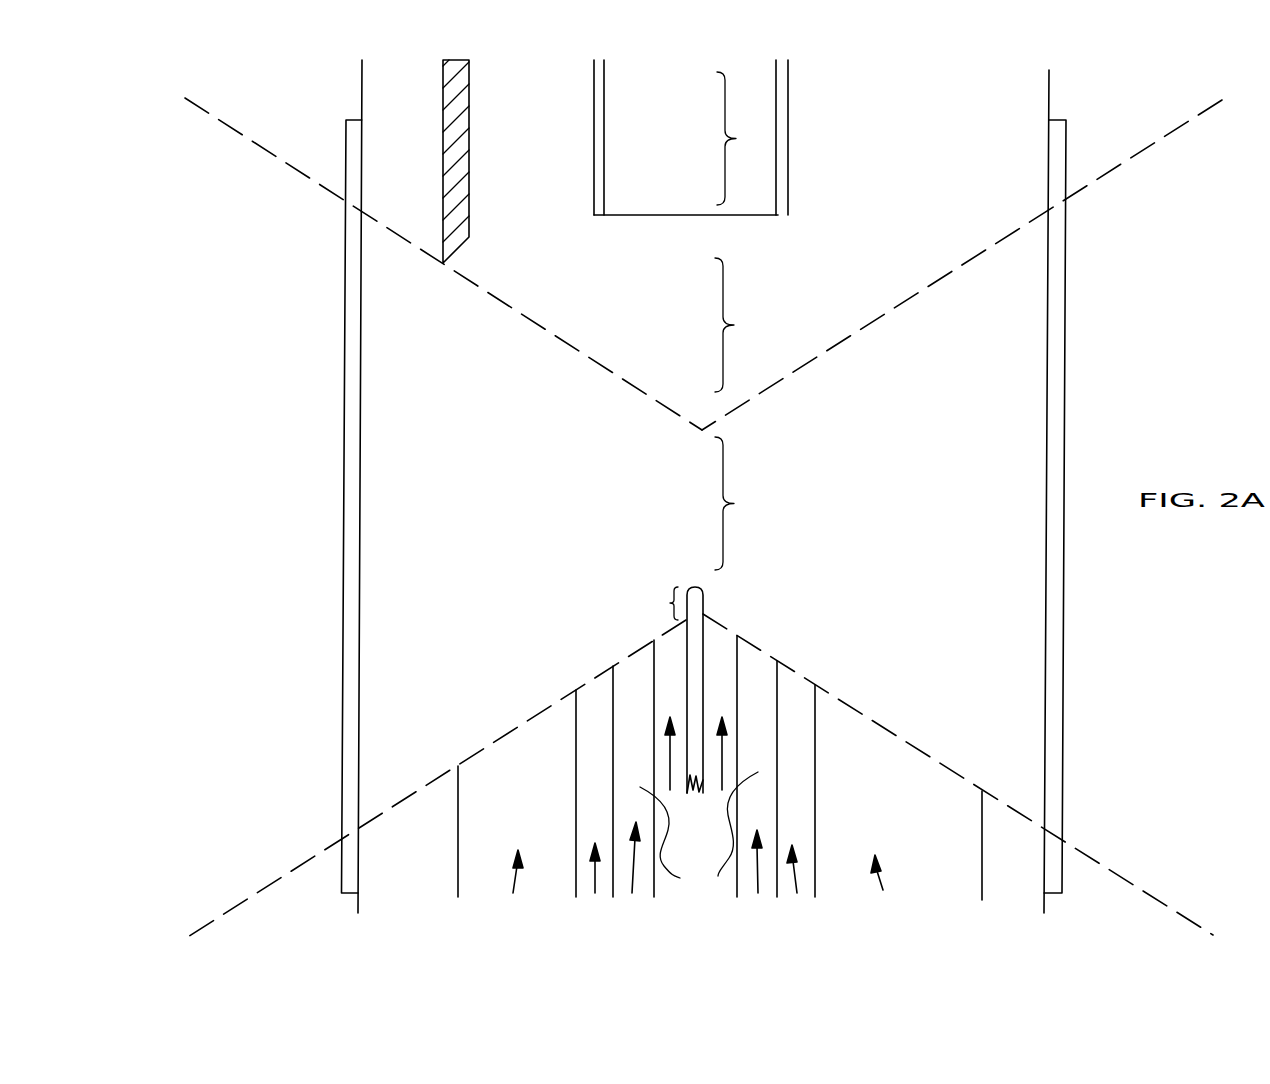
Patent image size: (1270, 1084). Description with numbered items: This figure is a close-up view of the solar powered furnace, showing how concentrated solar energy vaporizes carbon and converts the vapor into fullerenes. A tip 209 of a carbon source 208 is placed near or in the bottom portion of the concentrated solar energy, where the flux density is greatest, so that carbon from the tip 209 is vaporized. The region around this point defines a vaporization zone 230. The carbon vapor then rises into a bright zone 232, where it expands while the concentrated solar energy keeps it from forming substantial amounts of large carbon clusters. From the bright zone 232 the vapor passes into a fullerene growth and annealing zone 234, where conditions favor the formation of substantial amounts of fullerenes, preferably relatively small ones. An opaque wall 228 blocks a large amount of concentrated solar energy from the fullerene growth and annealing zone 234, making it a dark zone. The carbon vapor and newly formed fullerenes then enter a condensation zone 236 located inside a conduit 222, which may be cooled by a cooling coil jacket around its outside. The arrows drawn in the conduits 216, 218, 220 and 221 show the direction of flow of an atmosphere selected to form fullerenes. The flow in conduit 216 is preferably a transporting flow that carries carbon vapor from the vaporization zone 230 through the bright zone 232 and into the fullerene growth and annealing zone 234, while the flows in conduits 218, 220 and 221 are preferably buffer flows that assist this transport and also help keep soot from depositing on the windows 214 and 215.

The window 214 is at (345, 292).
The window 215 is at (1064, 248).
The opaque wall 228 is at (469, 129).
The conduit 222 is at (788, 138).
The condensation zone 236 is at (744, 138).
The fullerene growth and annealing zone 234 is at (746, 325).
The bright zone 232 is at (760, 503).
The vaporization zone 230 is at (668, 603).
The tip 209 is at (697, 586).
The carbon source 208 is at (703, 657).
The conduit 220 is at (598, 825).
The conduit 221 is at (706, 855).
The conduit 216 is at (693, 805).
The conduit 218 is at (699, 830).